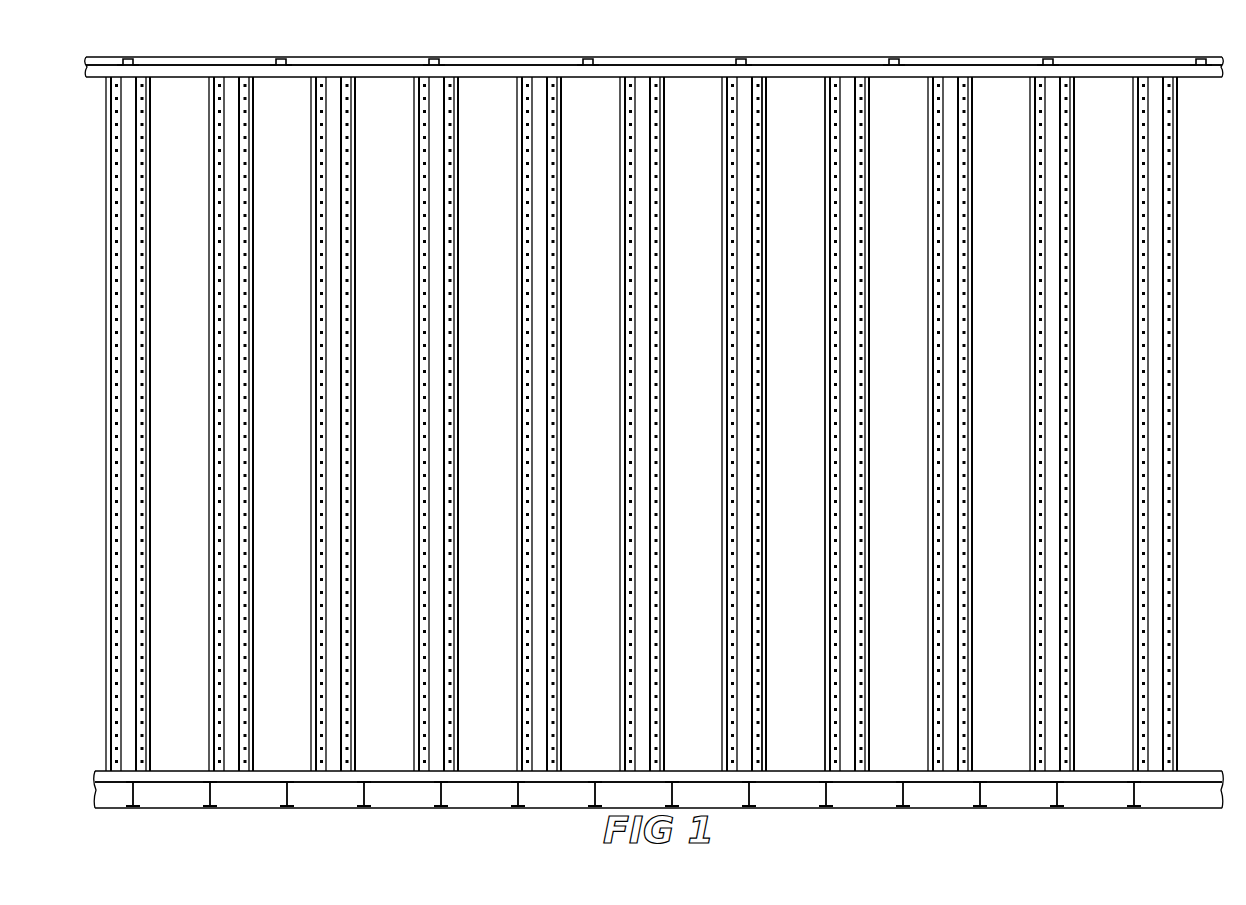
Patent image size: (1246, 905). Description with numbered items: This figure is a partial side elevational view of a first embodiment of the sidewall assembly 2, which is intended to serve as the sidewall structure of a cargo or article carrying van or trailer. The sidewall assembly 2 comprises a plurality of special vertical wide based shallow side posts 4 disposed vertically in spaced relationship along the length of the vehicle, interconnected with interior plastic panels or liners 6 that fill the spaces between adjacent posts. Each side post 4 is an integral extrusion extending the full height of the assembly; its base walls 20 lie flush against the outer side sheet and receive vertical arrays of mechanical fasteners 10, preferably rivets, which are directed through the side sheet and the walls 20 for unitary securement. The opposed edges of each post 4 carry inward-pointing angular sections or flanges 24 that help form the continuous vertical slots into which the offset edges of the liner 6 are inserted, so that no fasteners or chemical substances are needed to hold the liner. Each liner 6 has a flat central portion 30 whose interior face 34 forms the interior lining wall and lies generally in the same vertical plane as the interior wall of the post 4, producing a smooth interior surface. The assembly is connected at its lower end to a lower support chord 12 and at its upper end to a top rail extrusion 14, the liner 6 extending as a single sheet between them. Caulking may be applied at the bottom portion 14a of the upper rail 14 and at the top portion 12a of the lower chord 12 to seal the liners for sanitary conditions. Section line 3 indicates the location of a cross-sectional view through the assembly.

The sidewall assembly 2 is at (1207, 138).
The section line 3 is at (953, 268).
The vertical side post 4 is at (868, 110).
The interior plastic panel or liner 6 is at (184, 298).
The mechanical fasteners 10 is at (548, 160).
The lower support chord 12 is at (1078, 775).
The top portion of lower chord 12a is at (374, 760).
The top rail extrusion 14 is at (1017, 65).
The bottom portion of upper rail 14a is at (379, 78).
The base wall 20 is at (758, 183).
The angular sections or flanges 24 is at (455, 337).
The flat central portion 30 is at (477, 97).
The interior face 34 is at (822, 98).